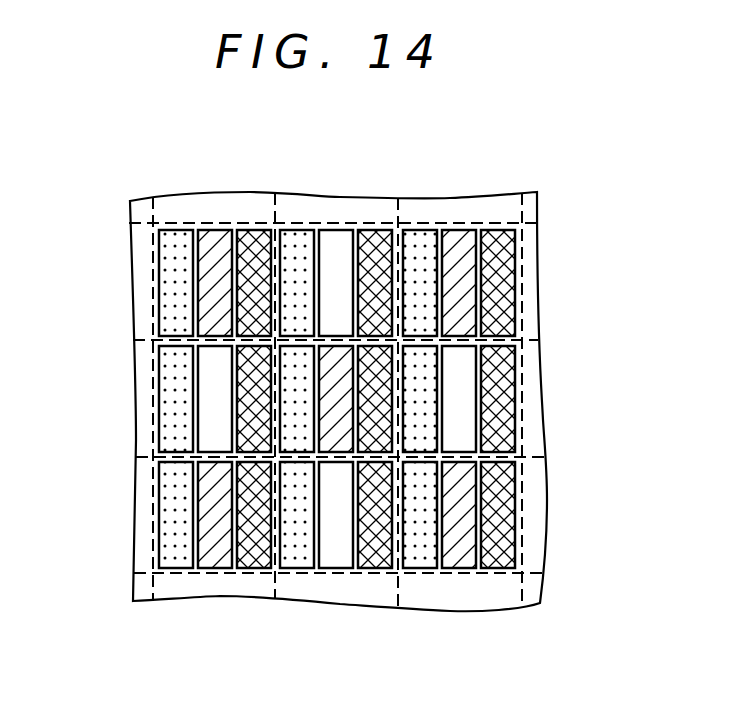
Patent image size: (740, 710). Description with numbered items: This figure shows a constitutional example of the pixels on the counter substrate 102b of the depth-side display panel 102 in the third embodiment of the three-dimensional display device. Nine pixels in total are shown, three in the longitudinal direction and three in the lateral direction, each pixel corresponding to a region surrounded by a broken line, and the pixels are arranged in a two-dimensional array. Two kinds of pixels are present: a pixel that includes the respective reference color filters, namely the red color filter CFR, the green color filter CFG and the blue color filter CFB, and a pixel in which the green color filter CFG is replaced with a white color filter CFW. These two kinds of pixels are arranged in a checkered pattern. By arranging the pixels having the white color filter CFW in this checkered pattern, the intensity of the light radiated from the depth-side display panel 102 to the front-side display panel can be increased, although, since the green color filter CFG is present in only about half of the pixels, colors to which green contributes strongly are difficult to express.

The depth-side display panel 102 is at (398, 401).
The counter substrate 102b is at (541, 265).
The red color filter CFR is at (298, 252).
The green color filter CFG is at (205, 283).
The blue color filter CFB is at (375, 252).
The white color filter CFW is at (338, 252).